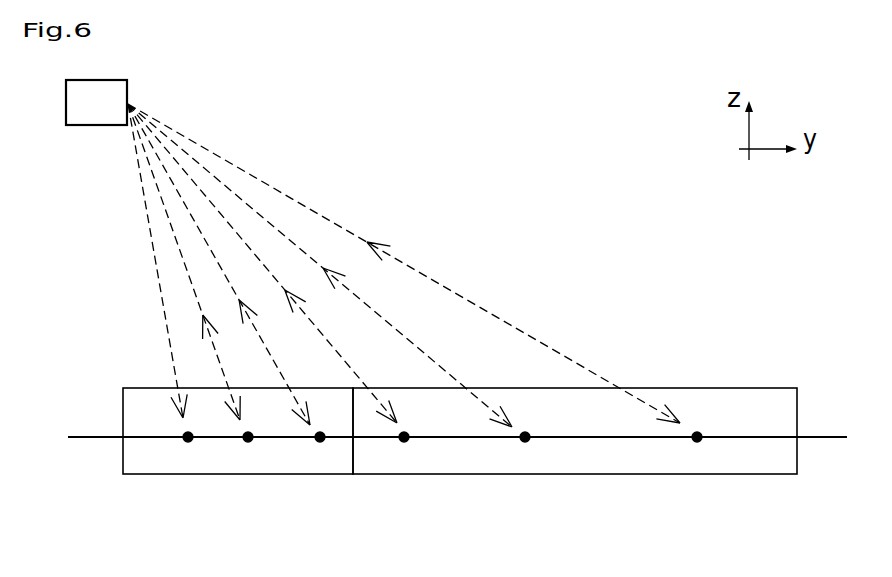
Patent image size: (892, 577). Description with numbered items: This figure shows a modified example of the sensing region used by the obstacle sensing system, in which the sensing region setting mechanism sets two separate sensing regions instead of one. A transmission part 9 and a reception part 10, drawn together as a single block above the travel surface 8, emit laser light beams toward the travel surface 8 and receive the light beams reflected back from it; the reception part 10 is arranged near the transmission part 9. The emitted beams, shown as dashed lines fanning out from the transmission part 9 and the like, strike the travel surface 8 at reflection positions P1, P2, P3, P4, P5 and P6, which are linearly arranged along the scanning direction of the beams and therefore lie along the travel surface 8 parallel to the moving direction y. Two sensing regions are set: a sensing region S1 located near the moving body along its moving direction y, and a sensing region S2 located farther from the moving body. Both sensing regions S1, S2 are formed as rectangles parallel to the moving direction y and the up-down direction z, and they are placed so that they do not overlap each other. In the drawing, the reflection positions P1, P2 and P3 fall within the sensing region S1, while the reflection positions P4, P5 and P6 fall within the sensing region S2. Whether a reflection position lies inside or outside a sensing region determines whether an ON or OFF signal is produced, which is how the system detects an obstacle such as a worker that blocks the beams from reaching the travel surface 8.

The travel surface 8 is at (80, 437).
The transmission part 9 is at (79, 134).
The reception part 10 is at (102, 125).
The sensing region S1 is at (147, 388).
The sensing region S2 is at (672, 388).
The reflection position P1 is at (188, 437).
The reflection position P2 is at (248, 437).
The reflection position P3 is at (320, 437).
The reflection position P4 is at (404, 437).
The reflection position P5 is at (525, 437).
The reflection position P6 is at (697, 437).